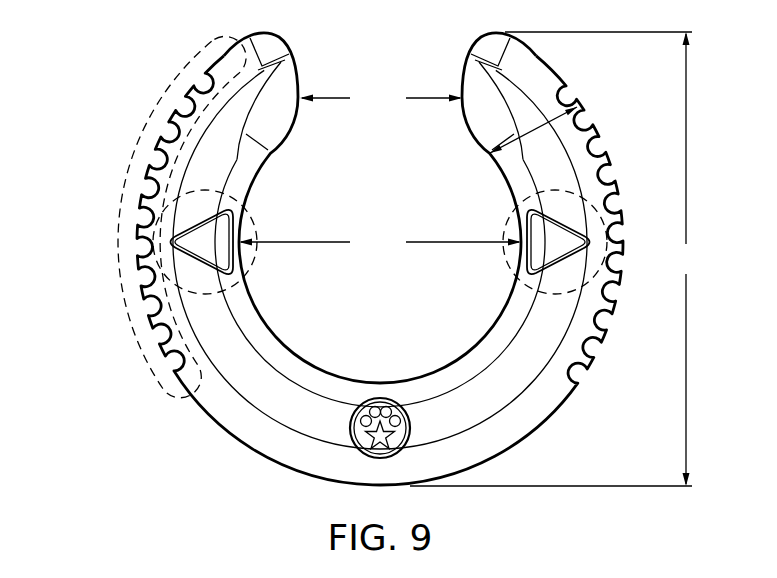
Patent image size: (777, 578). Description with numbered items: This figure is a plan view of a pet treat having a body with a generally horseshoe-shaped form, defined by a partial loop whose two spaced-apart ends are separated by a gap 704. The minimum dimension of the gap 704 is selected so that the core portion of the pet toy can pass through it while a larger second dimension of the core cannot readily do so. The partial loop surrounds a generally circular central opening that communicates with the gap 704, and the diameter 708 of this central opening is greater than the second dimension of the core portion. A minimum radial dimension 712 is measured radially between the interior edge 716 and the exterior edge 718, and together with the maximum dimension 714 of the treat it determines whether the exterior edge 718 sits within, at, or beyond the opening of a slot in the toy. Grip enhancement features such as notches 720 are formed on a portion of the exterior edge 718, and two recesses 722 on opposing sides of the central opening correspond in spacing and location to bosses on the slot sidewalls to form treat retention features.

The gap 704 is at (381, 98).
The diameter 708 is at (380, 242).
The minimum radial dimension 712 is at (583, 121).
The maximum dimension 714 is at (558, 259).
The interior edge 716 is at (376, 381).
The exterior edge 718 is at (208, 417).
The notches 720 is at (119, 240).
The recess 722 is at (258, 220).